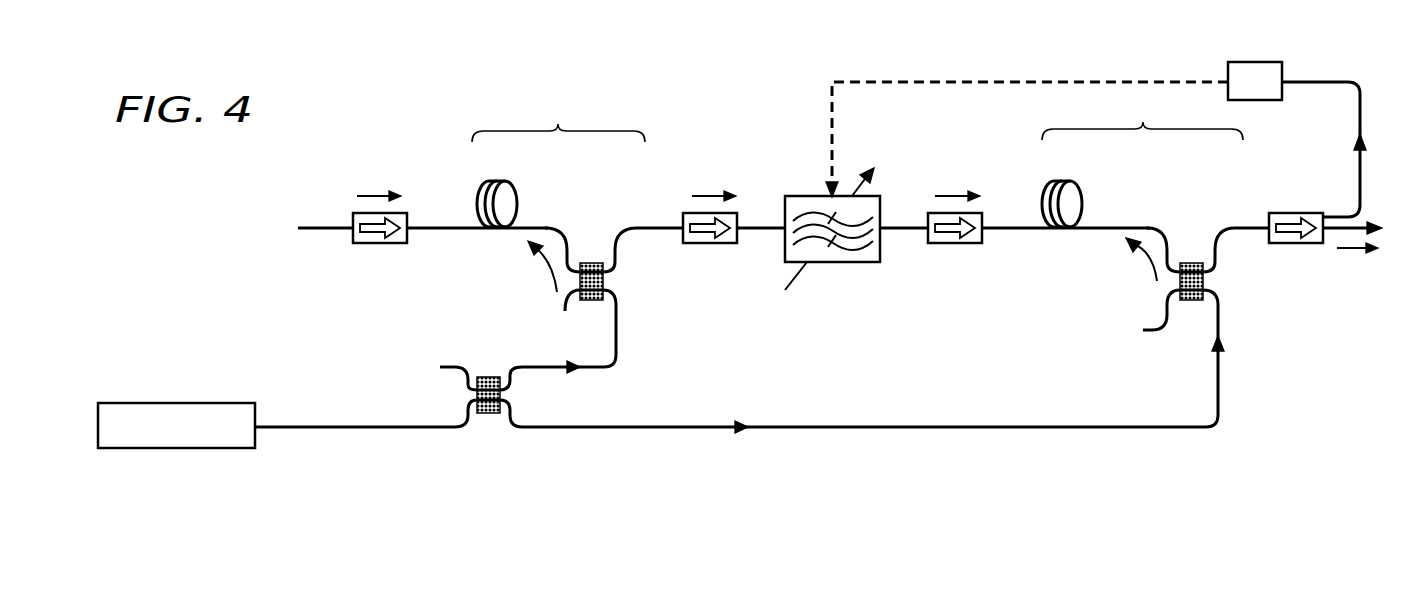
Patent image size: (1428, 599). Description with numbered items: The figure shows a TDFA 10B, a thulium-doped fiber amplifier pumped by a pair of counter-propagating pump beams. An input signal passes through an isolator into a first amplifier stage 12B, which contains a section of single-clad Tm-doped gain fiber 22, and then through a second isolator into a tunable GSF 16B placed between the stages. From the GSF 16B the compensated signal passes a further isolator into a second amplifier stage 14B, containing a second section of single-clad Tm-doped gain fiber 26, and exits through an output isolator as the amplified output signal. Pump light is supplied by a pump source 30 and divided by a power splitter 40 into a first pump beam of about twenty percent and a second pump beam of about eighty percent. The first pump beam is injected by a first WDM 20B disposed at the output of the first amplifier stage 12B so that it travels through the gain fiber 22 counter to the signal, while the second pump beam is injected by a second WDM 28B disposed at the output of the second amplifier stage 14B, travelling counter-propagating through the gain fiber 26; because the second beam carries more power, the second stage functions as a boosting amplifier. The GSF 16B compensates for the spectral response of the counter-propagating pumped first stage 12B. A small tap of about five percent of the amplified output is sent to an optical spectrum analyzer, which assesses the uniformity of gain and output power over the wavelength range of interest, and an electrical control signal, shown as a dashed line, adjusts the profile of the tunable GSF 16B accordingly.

The TDFA 10B is at (242, 180).
The first amplifier stage 12B is at (575, 120).
The second amplifier stage 14B is at (1162, 118).
The tunable GSF 16B is at (843, 263).
The first WDM 20B is at (604, 281).
The single-clad Tm-doped gain fiber 22 is at (518, 211).
The single-clad Tm-doped gain fiber 26 is at (1083, 200).
The second WDM 28B is at (1204, 281).
The pump source 30 is at (203, 403).
The power splitter 40 is at (486, 376).